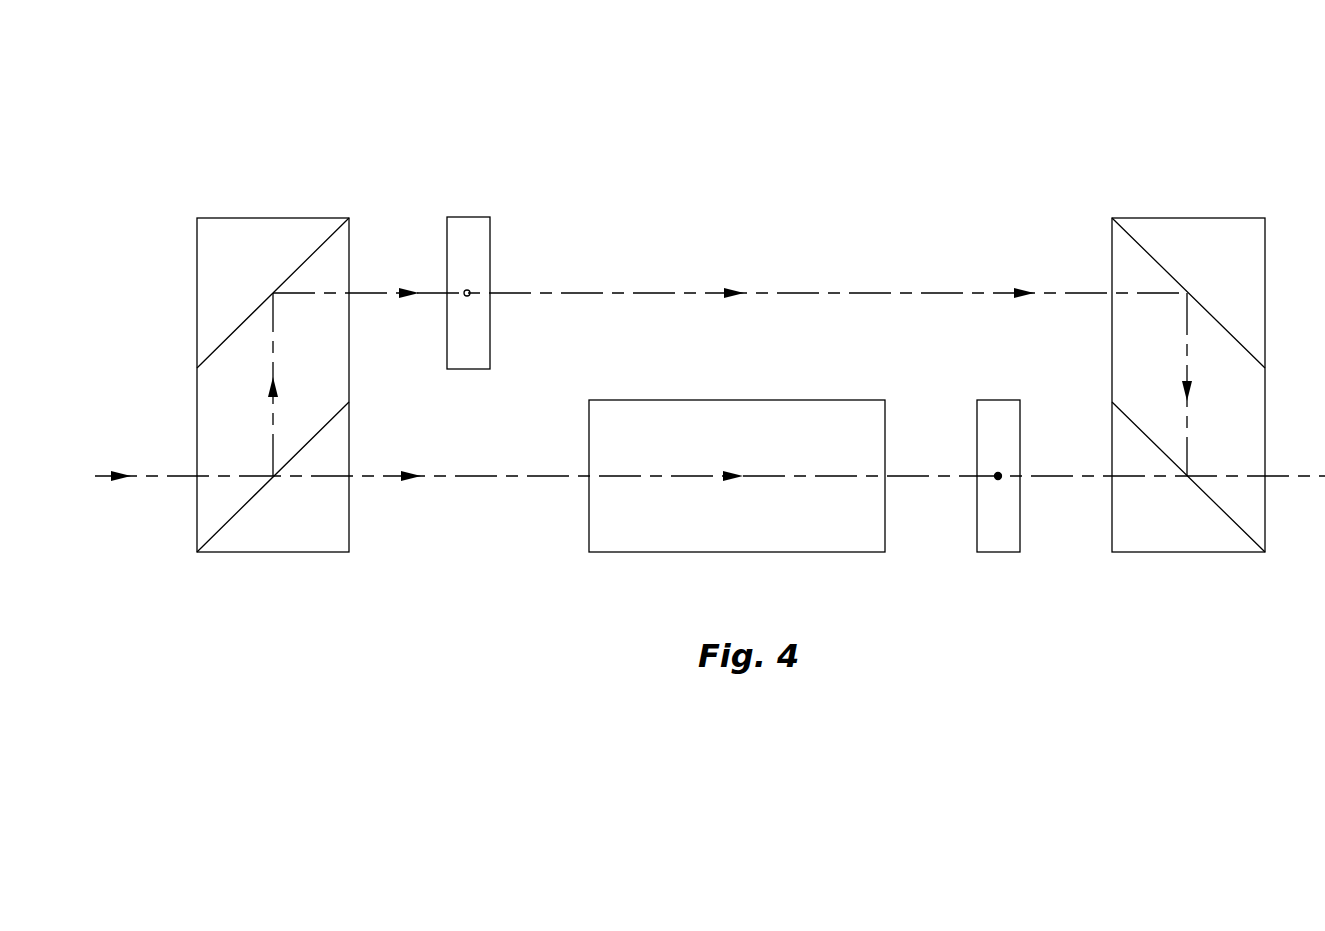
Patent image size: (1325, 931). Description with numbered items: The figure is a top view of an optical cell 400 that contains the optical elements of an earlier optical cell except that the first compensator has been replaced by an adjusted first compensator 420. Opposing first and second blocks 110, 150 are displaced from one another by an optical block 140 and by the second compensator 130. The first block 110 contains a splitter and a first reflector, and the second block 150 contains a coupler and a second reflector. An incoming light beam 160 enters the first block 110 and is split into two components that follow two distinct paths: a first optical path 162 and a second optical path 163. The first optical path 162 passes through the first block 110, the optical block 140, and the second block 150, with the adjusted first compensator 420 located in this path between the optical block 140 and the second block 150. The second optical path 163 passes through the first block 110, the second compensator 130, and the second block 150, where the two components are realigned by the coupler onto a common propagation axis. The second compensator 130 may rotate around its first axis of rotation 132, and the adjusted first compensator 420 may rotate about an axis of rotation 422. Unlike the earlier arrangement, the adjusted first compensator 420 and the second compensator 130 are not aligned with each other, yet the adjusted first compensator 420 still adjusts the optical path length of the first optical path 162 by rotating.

The optical cell 400 is at (376, 90).
The first block 110 is at (286, 218).
The second compensator 130 is at (483, 217).
The first axis of rotation 132 is at (470, 290).
The optical block 140 is at (768, 552).
The second block 150 is at (1172, 218).
The light beam 160 is at (181, 478).
The first optical path 162 is at (937, 478).
The second optical path 163 is at (852, 293).
The adjusted first compensator 420 is at (1012, 552).
The axis of rotation 422 is at (1000, 478).